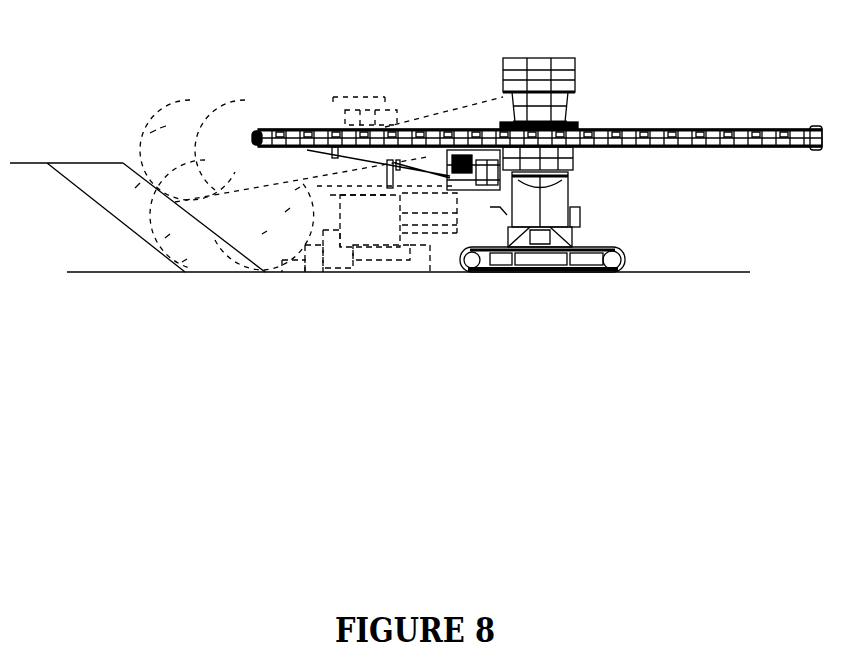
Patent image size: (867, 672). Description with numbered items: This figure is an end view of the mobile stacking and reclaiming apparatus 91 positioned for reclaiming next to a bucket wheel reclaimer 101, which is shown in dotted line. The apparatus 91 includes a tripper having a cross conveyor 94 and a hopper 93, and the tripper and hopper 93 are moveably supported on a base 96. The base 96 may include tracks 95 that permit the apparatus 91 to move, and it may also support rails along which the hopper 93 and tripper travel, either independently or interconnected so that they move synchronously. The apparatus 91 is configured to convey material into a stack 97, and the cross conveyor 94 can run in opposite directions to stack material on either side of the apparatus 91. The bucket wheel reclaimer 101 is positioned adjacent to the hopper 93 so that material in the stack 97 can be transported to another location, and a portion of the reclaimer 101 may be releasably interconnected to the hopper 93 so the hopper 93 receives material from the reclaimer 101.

The mobile stacking and reclaiming apparatus 91 is at (612, 74).
The hopper 93 is at (503, 73).
The cross conveyor 94 is at (733, 125).
The tracks 95 is at (577, 272).
The base 96 is at (616, 211).
The stack 97 is at (108, 250).
The bucket wheel reclaimer 101 is at (352, 272).